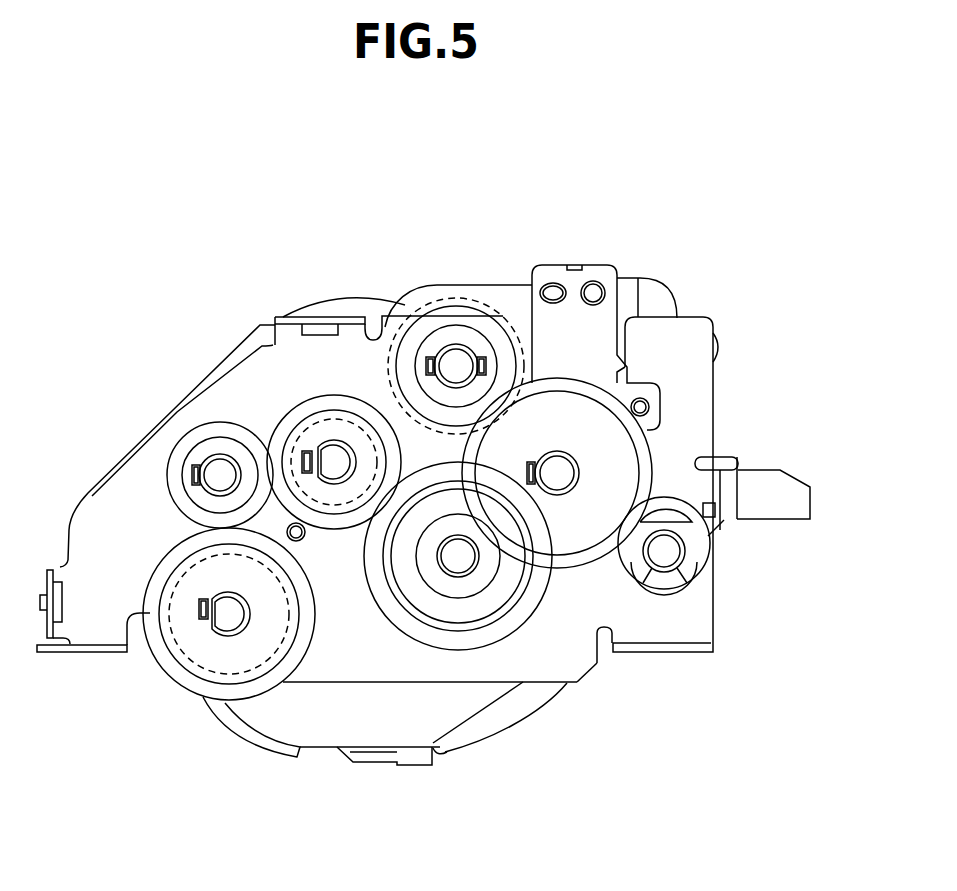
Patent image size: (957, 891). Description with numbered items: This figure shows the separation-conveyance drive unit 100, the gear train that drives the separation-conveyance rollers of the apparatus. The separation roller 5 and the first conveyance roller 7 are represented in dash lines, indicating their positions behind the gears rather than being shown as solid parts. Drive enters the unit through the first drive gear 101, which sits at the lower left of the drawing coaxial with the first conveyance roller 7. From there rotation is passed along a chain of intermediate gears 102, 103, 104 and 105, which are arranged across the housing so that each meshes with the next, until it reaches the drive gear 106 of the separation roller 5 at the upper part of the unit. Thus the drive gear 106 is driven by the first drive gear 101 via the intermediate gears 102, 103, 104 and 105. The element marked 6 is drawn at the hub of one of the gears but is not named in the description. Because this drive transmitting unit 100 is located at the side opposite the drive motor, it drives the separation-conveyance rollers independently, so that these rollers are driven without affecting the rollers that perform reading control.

The separation-conveyance drive unit 100 is at (680, 238).
The separation roller 5 is at (433, 303).
The gear hub 6 is at (338, 427).
The first conveyance roller 7 is at (192, 585).
The first drive gear 101 is at (167, 677).
The intermediate gear 102 is at (197, 442).
The intermediate gear 103 is at (305, 423).
The intermediate gear 104 is at (523, 610).
The intermediate gear 105 is at (642, 450).
The drive gear of the separation roller 106 is at (460, 324).